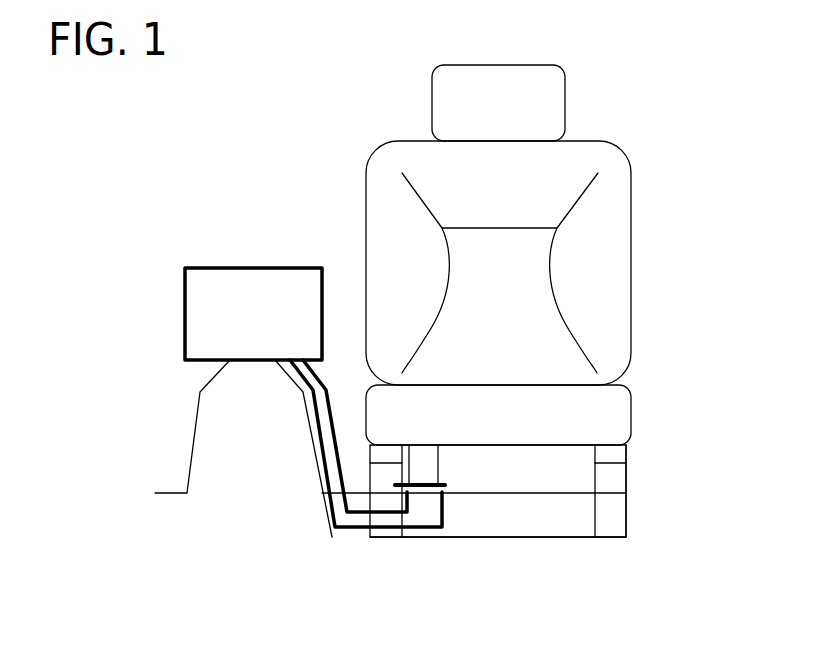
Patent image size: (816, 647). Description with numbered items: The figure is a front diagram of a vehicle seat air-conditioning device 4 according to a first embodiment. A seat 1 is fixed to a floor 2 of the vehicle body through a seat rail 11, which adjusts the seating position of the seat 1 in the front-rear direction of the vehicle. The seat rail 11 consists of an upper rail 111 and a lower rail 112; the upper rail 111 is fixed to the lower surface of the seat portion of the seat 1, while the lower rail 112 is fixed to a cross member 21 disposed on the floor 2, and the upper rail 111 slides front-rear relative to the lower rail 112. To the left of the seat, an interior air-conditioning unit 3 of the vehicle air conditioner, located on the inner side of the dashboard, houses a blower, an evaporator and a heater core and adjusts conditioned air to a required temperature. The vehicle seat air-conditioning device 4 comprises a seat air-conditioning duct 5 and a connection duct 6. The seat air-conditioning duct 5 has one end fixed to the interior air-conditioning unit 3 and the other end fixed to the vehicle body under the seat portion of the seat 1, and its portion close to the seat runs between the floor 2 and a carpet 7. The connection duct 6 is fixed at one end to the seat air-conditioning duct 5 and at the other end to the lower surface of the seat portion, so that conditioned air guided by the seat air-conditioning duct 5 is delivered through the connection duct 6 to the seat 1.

The seat 1 is at (580, 148).
The floor 2 is at (578, 538).
The interior air-conditioning unit 3 is at (210, 283).
The vehicle seat air-conditioning device 4 is at (367, 493).
The seat air-conditioning duct 5 is at (365, 520).
The connection duct 6 is at (425, 472).
The carpet 7 is at (537, 493).
The seat rail 11 is at (674, 470).
The cross member 21 is at (613, 524).
The upper rail 111 is at (620, 454).
The lower rail 112 is at (617, 478).